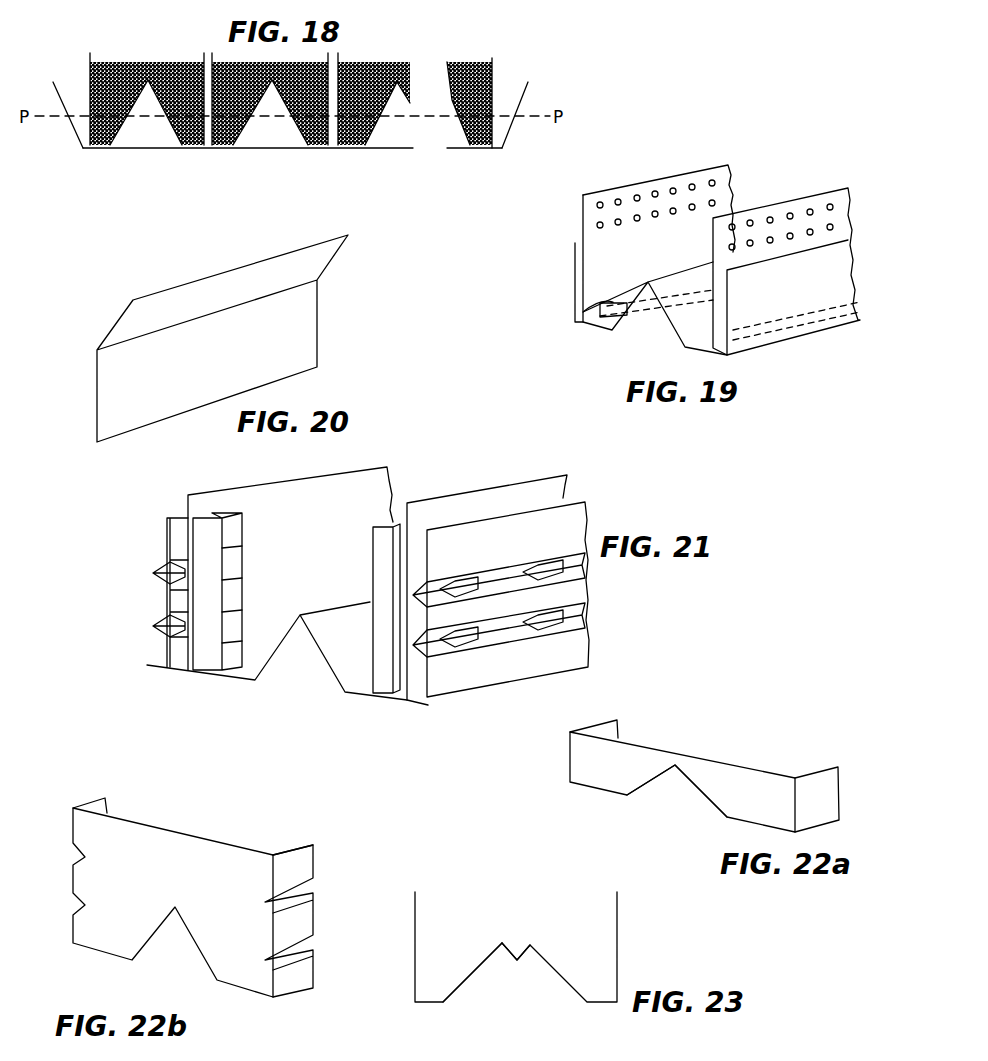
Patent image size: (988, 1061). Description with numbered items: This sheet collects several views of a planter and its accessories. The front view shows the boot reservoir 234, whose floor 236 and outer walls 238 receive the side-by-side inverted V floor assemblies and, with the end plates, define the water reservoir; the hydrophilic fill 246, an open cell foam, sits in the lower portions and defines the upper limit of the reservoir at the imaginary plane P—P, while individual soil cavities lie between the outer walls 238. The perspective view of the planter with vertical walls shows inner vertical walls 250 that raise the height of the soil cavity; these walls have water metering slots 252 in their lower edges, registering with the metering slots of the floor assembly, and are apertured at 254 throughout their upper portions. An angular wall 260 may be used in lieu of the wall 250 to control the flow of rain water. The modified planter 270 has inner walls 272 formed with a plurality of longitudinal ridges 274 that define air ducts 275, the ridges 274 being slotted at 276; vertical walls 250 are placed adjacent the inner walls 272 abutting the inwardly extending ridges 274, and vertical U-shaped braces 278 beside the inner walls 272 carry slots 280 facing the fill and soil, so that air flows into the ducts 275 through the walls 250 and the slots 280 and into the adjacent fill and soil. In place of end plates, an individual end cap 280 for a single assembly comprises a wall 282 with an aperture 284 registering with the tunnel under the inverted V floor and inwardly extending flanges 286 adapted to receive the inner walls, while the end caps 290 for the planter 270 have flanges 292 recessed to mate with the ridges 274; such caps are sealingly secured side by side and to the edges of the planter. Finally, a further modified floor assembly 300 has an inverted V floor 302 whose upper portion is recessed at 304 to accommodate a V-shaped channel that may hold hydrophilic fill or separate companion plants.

In FIG. 18, the boot reservoir 234 is at (202, 160).
In FIG. 18, the floor 236 is at (160, 150).
In FIG. 18, the walls 238 is at (62, 110).
In FIG. 18, the hydrophilic fill 246 is at (107, 137).
In FIG. 19, the inner vertical walls 250 is at (588, 272).
In FIG. 21, the inner vertical walls 250 is at (505, 510).
In FIG. 19, the water metering slots 252 is at (578, 317).
In FIG. 19, the apertures 254 is at (692, 180).
In FIG. 20, the angular wall 260 is at (122, 292).
In FIG. 21, the planter 270 is at (272, 695).
In FIG. 21, the inner walls 272 is at (167, 540).
In FIG. 21, the longitudinal ridges 274 is at (505, 590).
In FIG. 21, the air ducts 275 is at (153, 628).
In FIG. 21, the slots 276 is at (553, 617).
In FIG. 21, the U-shaped braces 278 is at (373, 550).
In FIG. 21, the end cap 280 is at (238, 627).
In FIG. 22a, the end cap 280 is at (721, 748).
In FIG. 22a, the wall 282 is at (617, 773).
In FIG. 22a, the aperture 284 is at (678, 783).
In FIG. 22a, the inwardly extending flanges 286 is at (828, 810).
In FIG. 22b, the end caps 290 is at (242, 800).
In FIG. 22b, the flanges 292 is at (97, 800).
In FIG. 23, the floor assembly 300 is at (628, 957).
In FIG. 23, the inverted V floor 302 is at (475, 968).
In FIG. 23, the recess 304 is at (515, 948).